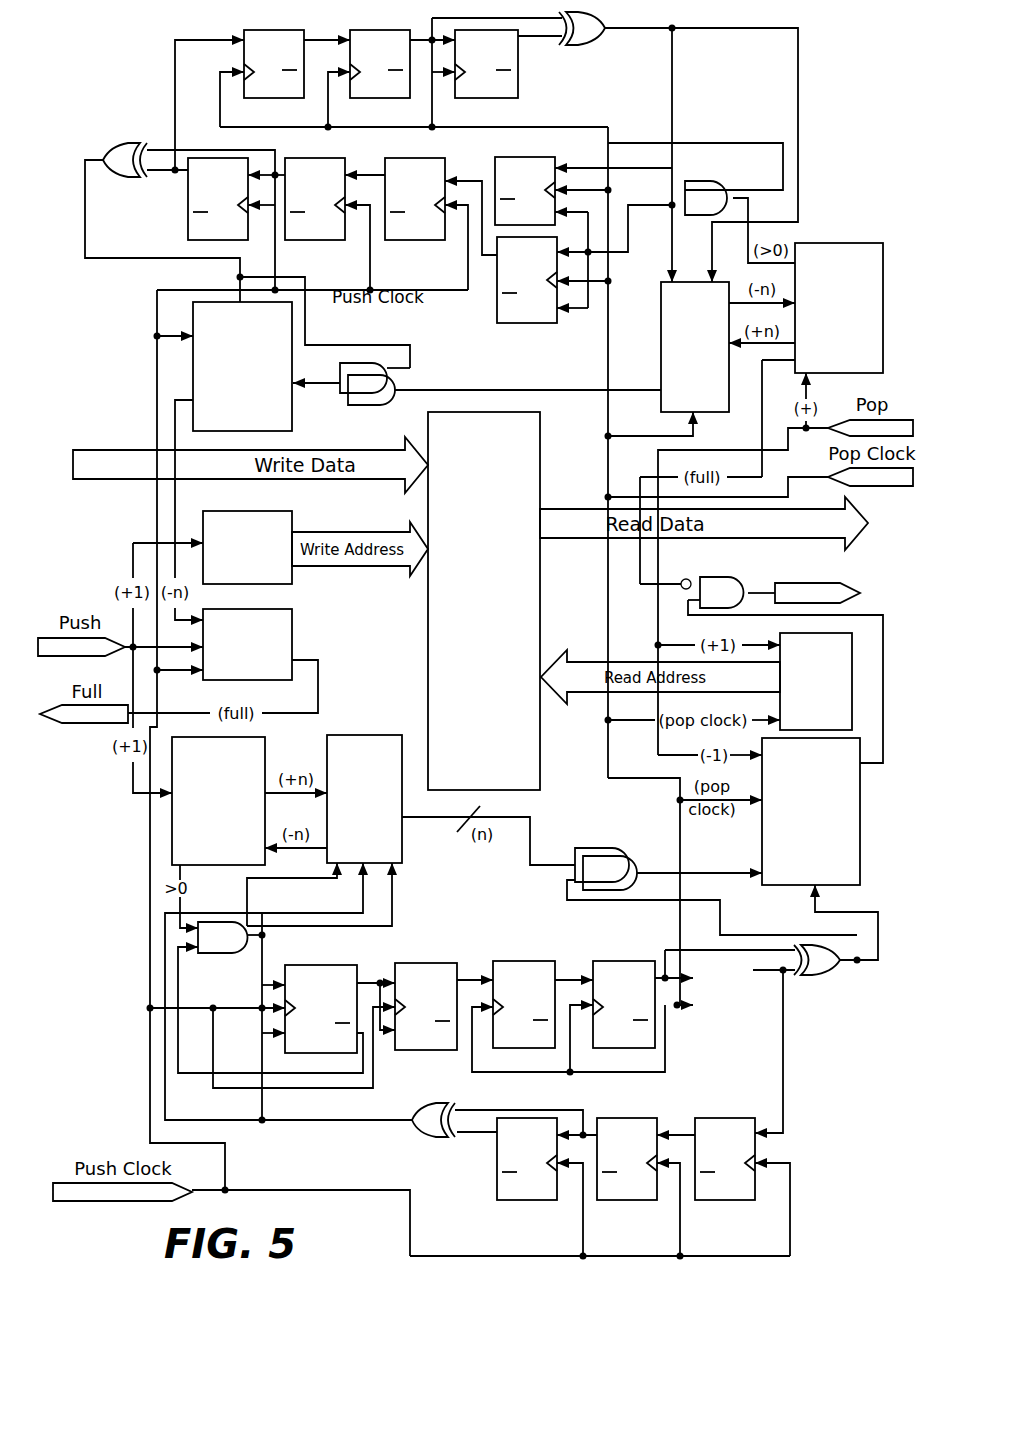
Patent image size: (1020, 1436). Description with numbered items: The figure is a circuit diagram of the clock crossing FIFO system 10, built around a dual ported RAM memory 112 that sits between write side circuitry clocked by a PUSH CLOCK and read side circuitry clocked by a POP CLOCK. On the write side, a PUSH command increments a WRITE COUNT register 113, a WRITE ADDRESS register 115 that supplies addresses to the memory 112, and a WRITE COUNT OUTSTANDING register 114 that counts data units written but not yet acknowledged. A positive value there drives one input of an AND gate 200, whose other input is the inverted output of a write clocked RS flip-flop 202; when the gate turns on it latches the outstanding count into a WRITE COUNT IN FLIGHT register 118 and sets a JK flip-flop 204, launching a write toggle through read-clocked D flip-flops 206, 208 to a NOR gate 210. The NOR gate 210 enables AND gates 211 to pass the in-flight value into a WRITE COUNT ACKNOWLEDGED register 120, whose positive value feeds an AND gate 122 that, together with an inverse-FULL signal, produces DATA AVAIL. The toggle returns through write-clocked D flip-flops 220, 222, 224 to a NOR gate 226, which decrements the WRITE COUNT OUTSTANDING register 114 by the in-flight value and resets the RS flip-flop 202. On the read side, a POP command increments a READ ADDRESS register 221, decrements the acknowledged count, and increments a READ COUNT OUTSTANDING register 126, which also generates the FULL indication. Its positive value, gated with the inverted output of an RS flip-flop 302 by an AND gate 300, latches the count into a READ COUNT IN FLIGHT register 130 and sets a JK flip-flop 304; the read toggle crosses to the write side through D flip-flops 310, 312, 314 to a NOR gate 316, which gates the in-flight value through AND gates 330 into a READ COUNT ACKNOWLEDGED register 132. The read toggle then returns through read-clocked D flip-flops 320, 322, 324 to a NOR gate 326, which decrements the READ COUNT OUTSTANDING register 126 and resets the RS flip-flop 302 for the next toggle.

The clock crossing FIFO system 10 is at (132, 90).
The memory 112 is at (428, 659).
The WRITE COUNT register 113 is at (292, 612).
The WRITE COUNT OUTSTANDING register 114 is at (172, 828).
The WRITE ADDRESS register 115 is at (292, 514).
The WRITE COUNT IN FLIGHT register 118 is at (345, 735).
The WRITE COUNT ACKNOWLEDGED register 120 is at (790, 885).
The AND gate 122 is at (703, 577).
The READ COUNT OUTSTANDING register 126 is at (828, 243).
The READ COUNT IN FLIGHT register 130 is at (661, 347).
The READ COUNT ACKNOWLEDGED register 132 is at (193, 366).
The AND gate 200 is at (200, 953).
The write clocked RS flip-flop 202 is at (300, 965).
The JK flip-flop 204 is at (405, 963).
The D flip-flop 206 is at (500, 961).
The D flip-flop 208 is at (565, 1082).
The NOR gate 210 is at (826, 975).
The AND gates 211 is at (622, 848).
The write clocked D flip-flop 220 is at (762, 1200).
The READ ADDRESS register 221 is at (852, 651).
The write clocked D flip-flop 222 is at (616, 1200).
The write clocked D flip-flop 224 is at (518, 1200).
The NOR gate 226 is at (424, 1137).
The AND gate 300 is at (705, 181).
The RS flip-flop 302 is at (495, 173).
The JK flip-flop 304 is at (557, 323).
The D flip-flop 310 is at (445, 240).
The D flip-flop 312 is at (312, 240).
The D flip-flop 314 is at (188, 232).
The NOR gate 316 is at (119, 177).
The read clock D flip-flop 320 is at (292, 98).
The read clock D flip-flop 322 is at (398, 98).
The read clock D flip-flop 324 is at (518, 86).
The NOR gate 326 is at (604, 40).
The AND gates 330 is at (372, 405).